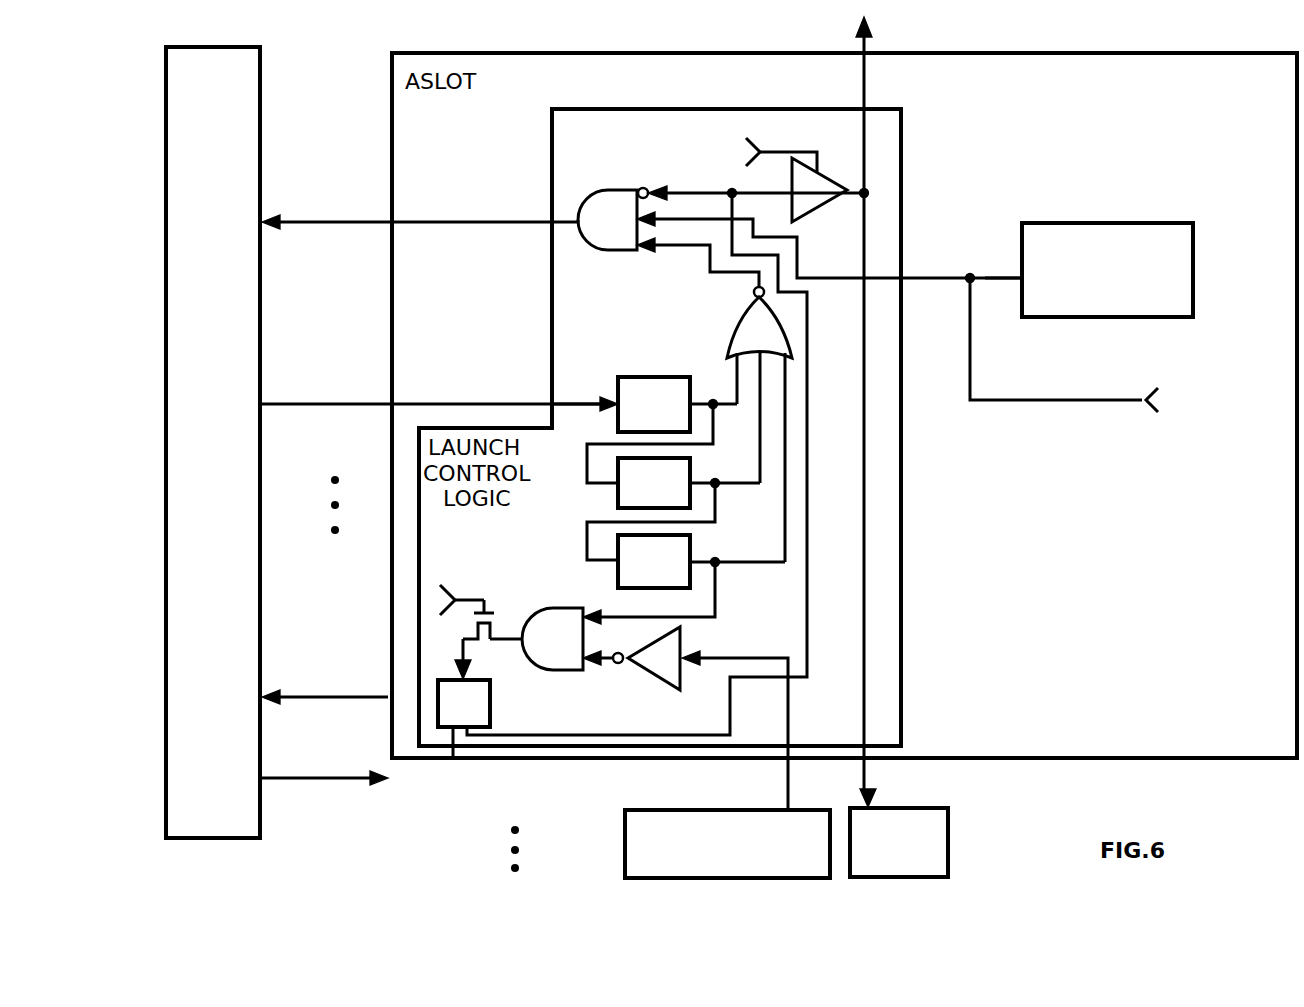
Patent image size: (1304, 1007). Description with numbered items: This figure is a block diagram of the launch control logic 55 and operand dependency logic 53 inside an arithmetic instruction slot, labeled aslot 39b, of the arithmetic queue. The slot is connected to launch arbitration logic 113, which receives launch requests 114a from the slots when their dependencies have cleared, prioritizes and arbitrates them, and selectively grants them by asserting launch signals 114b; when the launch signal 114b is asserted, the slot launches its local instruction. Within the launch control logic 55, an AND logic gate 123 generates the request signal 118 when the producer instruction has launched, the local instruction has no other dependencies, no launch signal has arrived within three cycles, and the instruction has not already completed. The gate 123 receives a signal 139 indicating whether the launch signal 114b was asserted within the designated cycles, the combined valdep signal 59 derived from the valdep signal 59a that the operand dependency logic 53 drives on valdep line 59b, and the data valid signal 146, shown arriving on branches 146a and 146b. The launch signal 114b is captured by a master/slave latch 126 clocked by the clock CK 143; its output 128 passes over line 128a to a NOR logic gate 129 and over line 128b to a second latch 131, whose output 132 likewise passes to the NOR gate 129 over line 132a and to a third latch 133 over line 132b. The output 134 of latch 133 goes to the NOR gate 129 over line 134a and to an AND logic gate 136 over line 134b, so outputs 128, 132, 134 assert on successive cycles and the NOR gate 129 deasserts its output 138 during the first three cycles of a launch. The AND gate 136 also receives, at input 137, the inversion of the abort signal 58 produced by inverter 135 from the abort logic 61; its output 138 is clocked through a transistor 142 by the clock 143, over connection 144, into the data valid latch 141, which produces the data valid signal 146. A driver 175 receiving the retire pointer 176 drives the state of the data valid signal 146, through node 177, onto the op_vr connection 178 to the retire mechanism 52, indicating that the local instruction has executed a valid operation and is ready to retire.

The launch arbitration logic 113 is at (237, 800).
The launch request 114a is at (332, 225).
The launch signal 114b is at (332, 407).
The request signal 118 is at (583, 402).
The AND logic gate 123 is at (590, 189).
The master/slave latch 126 is at (640, 376).
The output of latch 128 is at (704, 401).
The line 128a is at (739, 393).
The line 128b is at (585, 470).
The NOR logic gate 129 is at (736, 317).
The master/slave latch 131 is at (692, 470).
The output of latch 132 is at (716, 488).
The line 132a is at (762, 463).
The line 132b is at (585, 546).
The master/slave latch 133 is at (693, 546).
The output of latch 134 is at (718, 566).
The line 134a is at (785, 540).
The line 134b is at (722, 617).
The inverter 135 is at (665, 690).
The AND logic gate 136 is at (580, 667).
The input of AND gate 136 137 is at (622, 616).
The output 138 is at (505, 633).
The signal 139 is at (652, 249).
The data valid latch 141 is at (452, 762).
The transistor 142 is at (496, 655).
The clock CK 143 is at (489, 600).
The line to data valid latch 144 is at (462, 650).
The data valid signal 146 is at (807, 503).
The inverted input of AND gate 123 146a is at (688, 189).
The junction on line 146 146b is at (740, 189).
The driver 175 is at (822, 212).
The retire pointer 176 is at (857, 165).
The junction with OP_VR line 177 is at (862, 197).
The operand valid ready connection 178 is at (864, 537).
The operand dependency logic 53 is at (1195, 266).
The launch control logic 55 is at (922, 669).
The abort signal 58 is at (790, 705).
The combined valdep signal 59 is at (936, 276).
The valdep signal 59a is at (996, 276).
The VALDEP line 59b is at (1086, 404).
The ASLOT boundary 39b is at (510, 762).
The abort logic 61 is at (820, 867).
The retire mechanism 52 is at (916, 867).